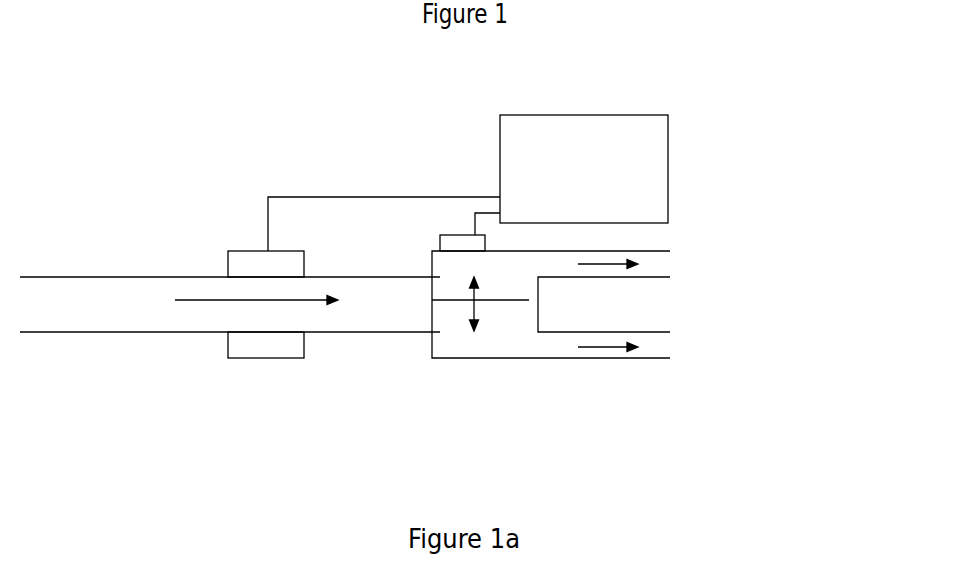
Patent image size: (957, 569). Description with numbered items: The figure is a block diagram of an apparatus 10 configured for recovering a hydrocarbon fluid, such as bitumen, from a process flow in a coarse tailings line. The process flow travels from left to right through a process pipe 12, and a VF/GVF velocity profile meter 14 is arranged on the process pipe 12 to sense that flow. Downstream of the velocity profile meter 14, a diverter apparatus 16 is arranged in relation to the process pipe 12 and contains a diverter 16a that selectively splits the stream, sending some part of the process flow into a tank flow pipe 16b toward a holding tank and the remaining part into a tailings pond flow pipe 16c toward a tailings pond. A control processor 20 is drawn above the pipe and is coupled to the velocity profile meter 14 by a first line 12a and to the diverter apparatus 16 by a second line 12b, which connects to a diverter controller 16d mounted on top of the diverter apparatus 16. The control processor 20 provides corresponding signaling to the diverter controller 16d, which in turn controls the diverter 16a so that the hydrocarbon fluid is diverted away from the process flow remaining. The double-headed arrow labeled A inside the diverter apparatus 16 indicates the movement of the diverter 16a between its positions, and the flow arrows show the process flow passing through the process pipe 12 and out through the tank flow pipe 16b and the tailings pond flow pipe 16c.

The apparatus 10 is at (118, 137).
The process pipe 12 is at (79, 332).
The signal line from velocity profile meter to control processor 12a is at (328, 197).
The control line from control processor to diverter actuator 12b is at (487, 213).
The velocity profile meter 14 is at (266, 358).
The diverter apparatus 16 is at (570, 358).
The diverter 16a is at (448, 300).
The tank flow pipe 16b is at (650, 251).
The tailings pond flow pipe 16c is at (658, 358).
The diverter controller 16d is at (440, 240).
The control processor 20 is at (584, 169).
The gate movement direction A is at (480, 333).